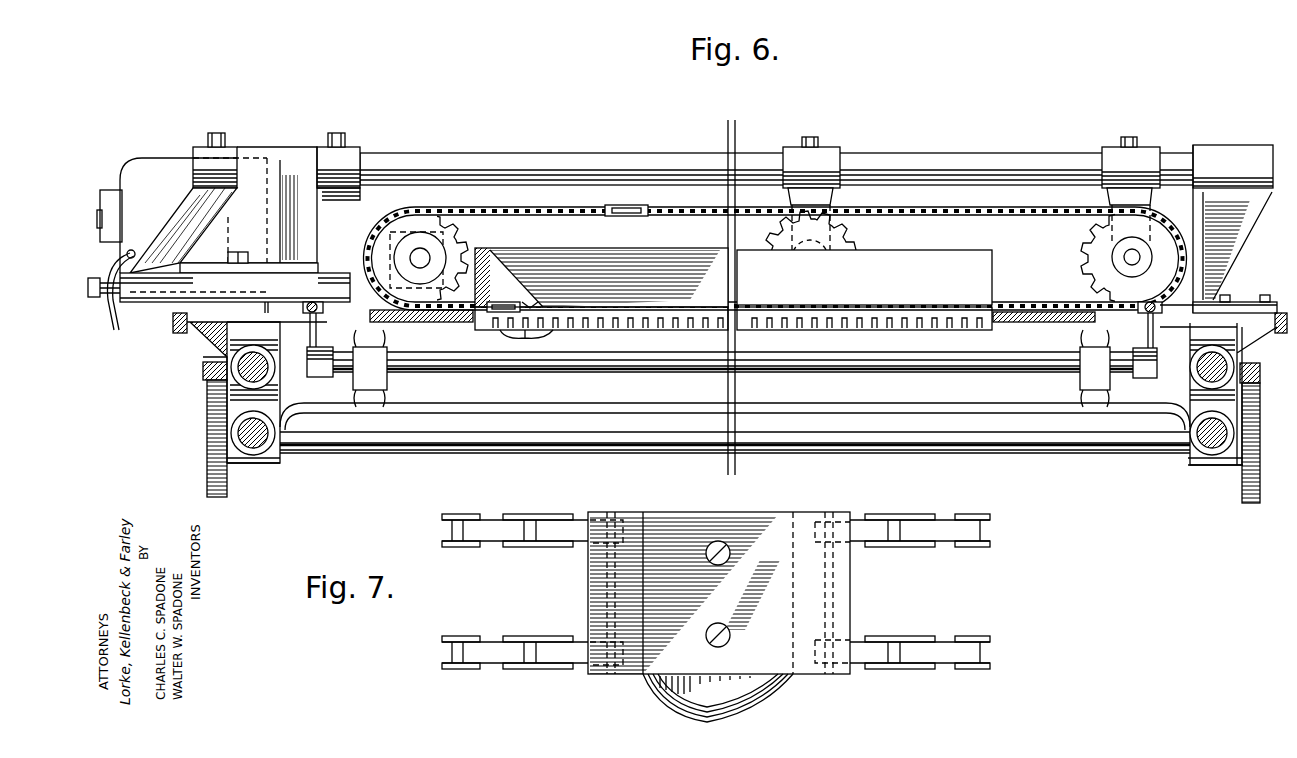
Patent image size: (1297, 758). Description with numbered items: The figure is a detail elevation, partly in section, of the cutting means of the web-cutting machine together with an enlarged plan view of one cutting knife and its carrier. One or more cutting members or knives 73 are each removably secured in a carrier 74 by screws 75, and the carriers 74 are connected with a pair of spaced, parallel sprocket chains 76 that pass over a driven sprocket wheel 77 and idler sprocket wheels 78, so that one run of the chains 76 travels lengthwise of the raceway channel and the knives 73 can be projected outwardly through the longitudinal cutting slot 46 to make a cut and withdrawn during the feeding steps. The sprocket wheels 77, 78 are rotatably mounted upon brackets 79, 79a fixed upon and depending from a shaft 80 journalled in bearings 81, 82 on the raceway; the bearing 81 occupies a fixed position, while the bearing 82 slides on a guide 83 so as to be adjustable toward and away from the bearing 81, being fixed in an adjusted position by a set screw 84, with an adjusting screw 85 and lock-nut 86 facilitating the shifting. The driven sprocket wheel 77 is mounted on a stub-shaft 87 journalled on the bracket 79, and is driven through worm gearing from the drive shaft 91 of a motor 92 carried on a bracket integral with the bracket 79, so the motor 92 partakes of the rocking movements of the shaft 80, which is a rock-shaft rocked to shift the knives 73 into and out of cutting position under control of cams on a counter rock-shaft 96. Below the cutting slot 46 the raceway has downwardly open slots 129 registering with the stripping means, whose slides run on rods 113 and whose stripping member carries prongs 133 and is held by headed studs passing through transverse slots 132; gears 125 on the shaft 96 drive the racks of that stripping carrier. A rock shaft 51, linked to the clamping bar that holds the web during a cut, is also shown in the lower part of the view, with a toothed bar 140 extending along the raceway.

In FIG. 6, the motor 92 is at (158, 160).
In FIG. 6, the bearing 82 is at (290, 153).
In FIG. 6, the shaft 80 is at (473, 153).
In FIG. 6, the bracket 79 is at (360, 185).
In FIG. 6, the bracket 79a is at (838, 194).
In FIG. 6, the cutting member 73 is at (638, 207).
In FIG. 7, the cutting member 73 is at (755, 702).
In FIG. 6, the sprocket chain 76 is at (548, 216).
In FIG. 7, the sprocket chain 76 is at (496, 522).
In FIG. 6, the carrier 74 is at (509, 297).
In FIG. 7, the carrier 74 is at (719, 593).
In FIG. 6, the drive shaft 91 is at (683, 257).
In FIG. 6, the driven sprocket wheel 77 is at (455, 224).
In FIG. 6, the stub-shaft 87 is at (410, 258).
In FIG. 6, the idler sprocket wheel 78 is at (857, 243).
In FIG. 6, the cutting slot 46 is at (768, 304).
In FIG. 6, the bearing 81 is at (1240, 275).
In FIG. 6, the set screw 84 is at (237, 252).
In FIG. 6, the lock-nut 86 is at (118, 272).
In FIG. 6, the adjusting screw 85 is at (95, 300).
In FIG. 6, the guide 83 is at (152, 304).
In FIG. 6, the transverse slot 132 is at (1152, 335).
In FIG. 6, the prong 133 is at (318, 330).
In FIG. 6, the rod 113 is at (207, 384).
In FIG. 6, the gear 125 is at (207, 462).
In FIG. 6, the counter rock-shaft 96 is at (373, 450).
In FIG. 6, the rock shaft 51 is at (424, 366).
In FIG. 6, the rack 140 is at (648, 326).
In FIG. 6, the slot 129 is at (526, 344).
In FIG. 7, the screw 75 is at (715, 566).